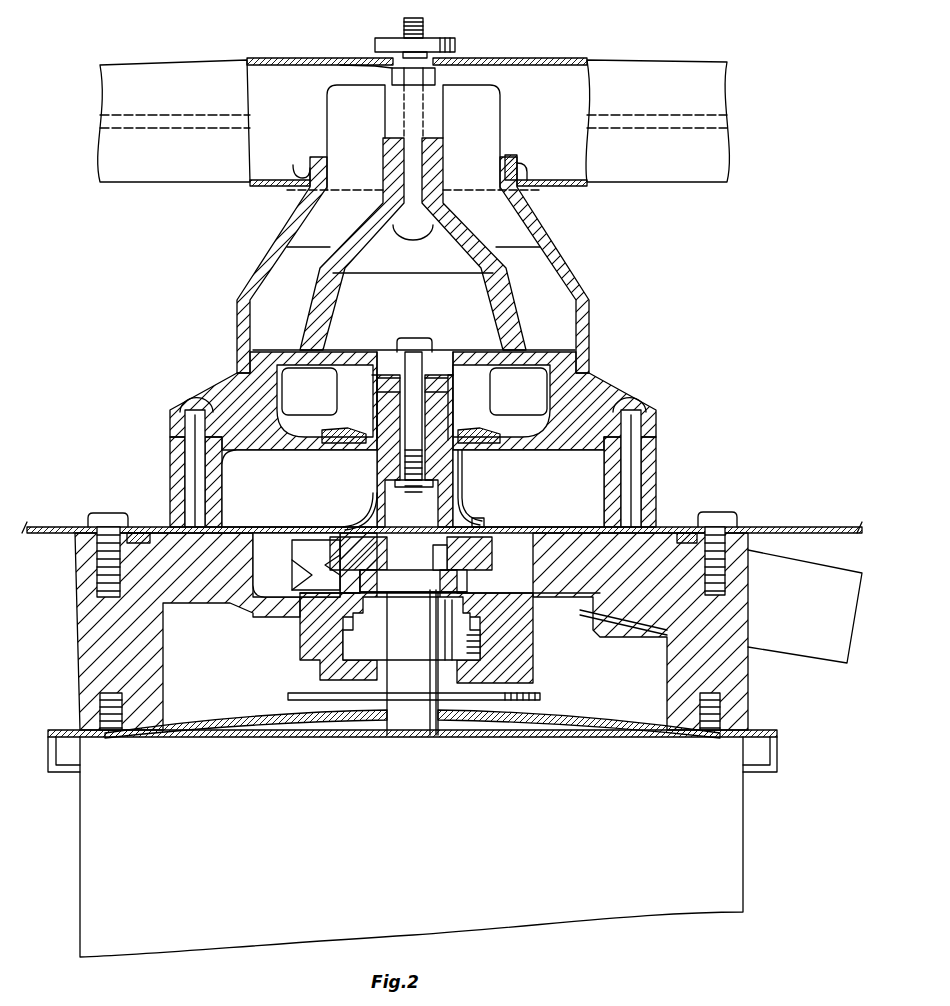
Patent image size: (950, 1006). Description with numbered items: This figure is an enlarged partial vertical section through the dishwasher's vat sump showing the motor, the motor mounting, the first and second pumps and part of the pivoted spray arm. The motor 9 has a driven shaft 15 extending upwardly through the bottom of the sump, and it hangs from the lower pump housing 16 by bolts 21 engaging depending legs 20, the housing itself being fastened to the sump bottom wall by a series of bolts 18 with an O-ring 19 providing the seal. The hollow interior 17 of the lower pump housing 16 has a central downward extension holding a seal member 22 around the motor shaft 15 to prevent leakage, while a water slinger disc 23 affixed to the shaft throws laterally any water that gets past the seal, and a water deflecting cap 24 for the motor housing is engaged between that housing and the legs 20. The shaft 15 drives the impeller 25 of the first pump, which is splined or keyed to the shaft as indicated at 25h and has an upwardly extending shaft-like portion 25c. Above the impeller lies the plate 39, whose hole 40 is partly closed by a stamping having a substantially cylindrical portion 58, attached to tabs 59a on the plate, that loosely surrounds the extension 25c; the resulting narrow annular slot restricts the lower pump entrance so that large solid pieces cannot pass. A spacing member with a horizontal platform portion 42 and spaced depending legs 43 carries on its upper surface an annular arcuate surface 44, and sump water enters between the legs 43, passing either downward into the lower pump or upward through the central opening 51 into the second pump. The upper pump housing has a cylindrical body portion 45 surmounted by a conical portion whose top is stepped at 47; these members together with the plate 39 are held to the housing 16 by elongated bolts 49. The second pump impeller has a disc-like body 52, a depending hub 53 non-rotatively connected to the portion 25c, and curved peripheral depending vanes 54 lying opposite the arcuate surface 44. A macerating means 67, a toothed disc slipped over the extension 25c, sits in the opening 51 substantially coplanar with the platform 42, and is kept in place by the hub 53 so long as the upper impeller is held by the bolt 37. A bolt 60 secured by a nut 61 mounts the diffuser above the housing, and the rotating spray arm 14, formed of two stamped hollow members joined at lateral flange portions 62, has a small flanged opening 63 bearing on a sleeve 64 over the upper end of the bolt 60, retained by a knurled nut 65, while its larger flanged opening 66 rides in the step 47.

The motor 9 is at (412, 843).
The rotating spray arm 14 is at (648, 74).
The driven shaft 15 is at (412, 624).
The lower pump housing 16 is at (624, 588).
The hollow interior 17 is at (276, 592).
The bolts 18 is at (110, 513).
The O-ring 19 is at (688, 532).
The depending legs 20 is at (150, 668).
The bolts 21 is at (98, 712).
The seal member 22 is at (506, 650).
The water slinger disc 23 is at (520, 694).
The water deflecting cap 24 is at (236, 725).
The impeller 25 is at (505, 527).
The shaft-like portion 25c is at (456, 500).
The spline or key 25h is at (437, 560).
The bolt 37 is at (414, 355).
The plate 39 is at (261, 527).
The hole 40 is at (336, 527).
The platform portion 42 is at (650, 454).
The depending legs 43 is at (222, 484).
The annular arcuate surface 44 is at (270, 420).
The cylindrical body portion 45 is at (586, 342).
The step 47 is at (514, 160).
The elongated bolts 49 is at (196, 402).
The central opening 51 is at (330, 444).
The disc-like body 52 is at (297, 358).
The depending hub 53 is at (455, 392).
The peripheral depending vanes 54 is at (414, 391).
The substantially cylindrical portion 58 is at (463, 476).
The tabs 59a is at (478, 522).
The bolt 60 is at (413, 240).
The nut 61 is at (436, 77).
The lateral flange portions 62 is at (710, 122).
The small flanged opening 63 is at (388, 67).
The sleeve 64 is at (416, 60).
The knurled nut 65 is at (455, 44).
The larger flanged opening 66 is at (291, 172).
The macerating means 67 is at (468, 428).